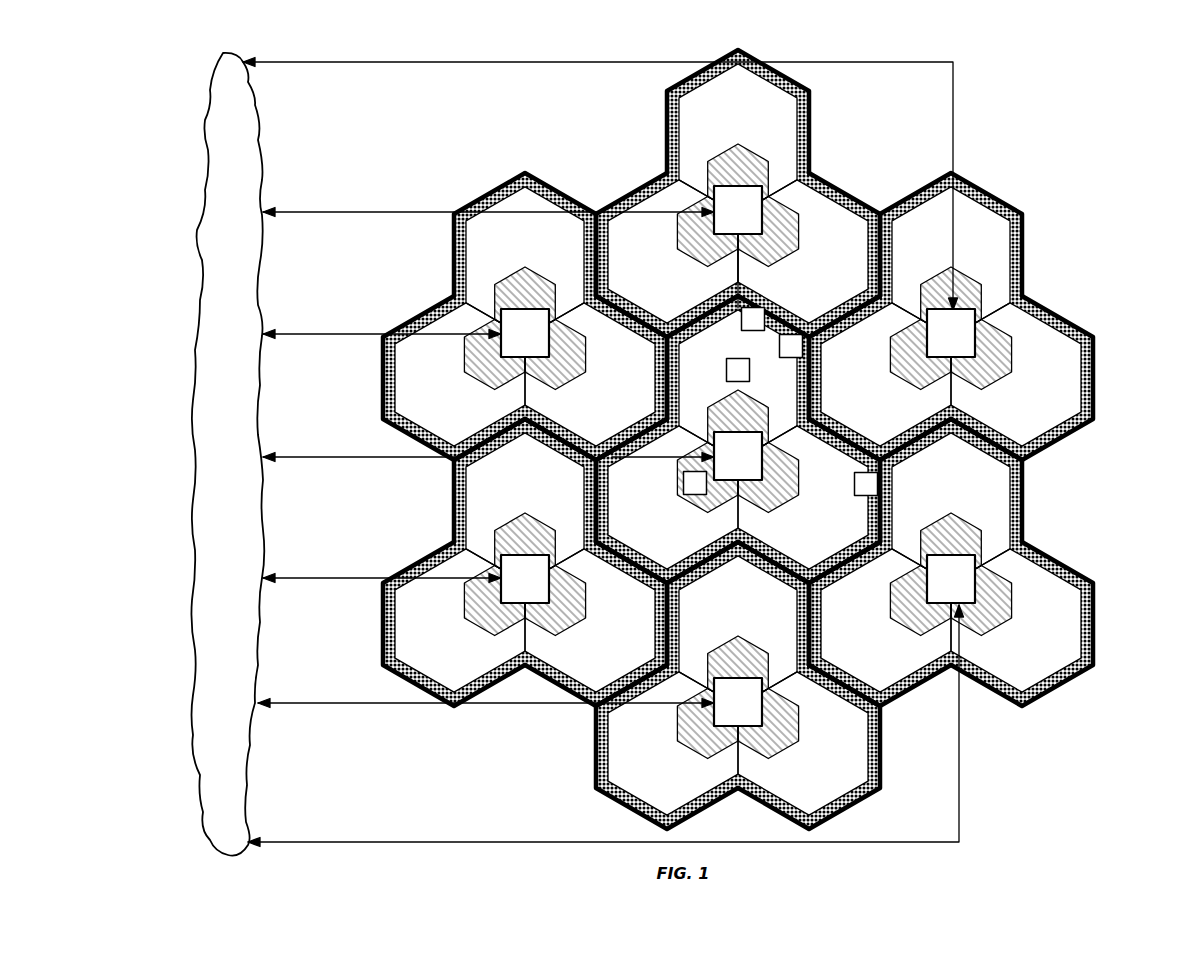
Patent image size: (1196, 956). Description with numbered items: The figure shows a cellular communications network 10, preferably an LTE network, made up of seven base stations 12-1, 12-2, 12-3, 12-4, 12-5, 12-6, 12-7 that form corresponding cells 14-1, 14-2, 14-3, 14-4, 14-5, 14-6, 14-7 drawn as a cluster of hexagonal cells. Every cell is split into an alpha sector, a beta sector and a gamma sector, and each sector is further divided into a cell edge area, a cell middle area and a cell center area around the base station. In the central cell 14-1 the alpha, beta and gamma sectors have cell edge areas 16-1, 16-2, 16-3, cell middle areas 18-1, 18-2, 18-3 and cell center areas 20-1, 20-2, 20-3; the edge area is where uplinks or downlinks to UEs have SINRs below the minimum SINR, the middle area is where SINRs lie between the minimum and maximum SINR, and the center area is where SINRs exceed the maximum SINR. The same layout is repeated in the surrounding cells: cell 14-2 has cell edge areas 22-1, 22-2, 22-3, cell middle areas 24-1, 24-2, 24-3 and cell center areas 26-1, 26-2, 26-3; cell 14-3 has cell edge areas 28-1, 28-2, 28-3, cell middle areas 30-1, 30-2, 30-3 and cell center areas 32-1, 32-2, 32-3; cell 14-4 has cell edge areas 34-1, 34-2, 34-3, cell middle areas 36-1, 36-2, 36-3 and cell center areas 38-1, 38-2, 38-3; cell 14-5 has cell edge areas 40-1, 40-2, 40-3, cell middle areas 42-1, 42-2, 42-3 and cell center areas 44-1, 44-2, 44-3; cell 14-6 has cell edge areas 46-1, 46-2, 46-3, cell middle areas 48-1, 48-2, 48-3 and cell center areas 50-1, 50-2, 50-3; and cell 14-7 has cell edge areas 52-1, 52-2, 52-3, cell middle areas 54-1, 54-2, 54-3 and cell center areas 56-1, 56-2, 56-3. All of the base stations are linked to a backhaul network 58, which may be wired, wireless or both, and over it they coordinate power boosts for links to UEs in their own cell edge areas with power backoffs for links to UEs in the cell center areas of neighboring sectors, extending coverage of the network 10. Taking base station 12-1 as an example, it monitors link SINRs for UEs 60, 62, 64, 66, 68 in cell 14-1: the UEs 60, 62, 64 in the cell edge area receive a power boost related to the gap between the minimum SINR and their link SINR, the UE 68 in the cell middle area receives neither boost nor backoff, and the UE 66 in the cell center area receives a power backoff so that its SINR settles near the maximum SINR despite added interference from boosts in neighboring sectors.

The cellular communications network 10 is at (1085, 115).
The backhaul network 58 is at (207, 110).
The base station 12-1 is at (738, 456).
The base station 12-2 is at (738, 210).
The base station 12-3 is at (951, 333).
The base station 12-4 is at (951, 579).
The base station 12-5 is at (738, 702).
The base station 12-6 is at (525, 579).
The base station 12-7 is at (525, 333).
The cell 14-1 is at (762, 369).
The cell 14-2 is at (734, 193).
The cell 14-3 is at (963, 316).
The cell 14-4 is at (978, 576).
The cell 14-5 is at (756, 688).
The cell 14-6 is at (491, 562).
The cell 14-7 is at (496, 303).
The cell edge area 16-1 is at (738, 357).
The cell edge area 16-2 is at (809, 501).
The cell edge area 16-3 is at (667, 501).
The cell middle area 18-1 is at (738, 385).
The cell middle area 18-2 is at (803, 497).
The cell middle area 18-3 is at (673, 497).
The cell center area 20-1 is at (738, 425).
The cell center area 20-2 is at (707, 481).
The cell center area 20-3 is at (768, 478).
The cell edge area 22-1 is at (705, 111).
The cell edge area 22-2 is at (815, 238).
The cell edge area 22-3 is at (656, 251).
The cell middle area 24-1 is at (738, 139).
The cell middle area 24-2 is at (803, 251).
The cell middle area 24-3 is at (673, 251).
The cell center area 26-1 is at (738, 179).
The cell center area 26-2 is at (707, 232).
The cell center area 26-3 is at (768, 232).
The cell edge area 28-1 is at (967, 234).
The cell edge area 28-2 is at (1034, 375).
The cell edge area 28-3 is at (879, 378).
The cell middle area 30-1 is at (951, 262).
The cell middle area 30-2 is at (1016, 374).
The cell middle area 30-3 is at (886, 374).
The cell center area 32-1 is at (950, 302).
The cell center area 32-2 is at (920, 355).
The cell center area 32-3 is at (981, 355).
The cell edge area 34-1 is at (986, 480).
The cell edge area 34-2 is at (1049, 624).
The cell edge area 34-3 is at (880, 638).
The cell middle area 36-1 is at (951, 508).
The cell middle area 36-2 is at (1016, 620).
The cell middle area 36-3 is at (886, 620).
The cell center area 38-1 is at (951, 548).
The cell center area 38-2 is at (920, 601).
The cell center area 38-3 is at (981, 601).
The cell edge area 40-1 is at (738, 603).
The cell edge area 40-2 is at (834, 747).
The cell edge area 40-3 is at (651, 750).
The cell middle area 42-1 is at (738, 631).
The cell middle area 42-2 is at (803, 743).
The cell middle area 42-3 is at (673, 743).
The cell center area 44-1 is at (738, 671).
The cell center area 44-2 is at (707, 724).
The cell center area 44-3 is at (768, 724).
The cell edge area 46-1 is at (486, 480).
The cell edge area 46-2 is at (587, 624).
The cell edge area 46-3 is at (420, 624).
The cell middle area 48-1 is at (525, 508).
The cell middle area 48-2 is at (590, 620).
The cell middle area 48-3 is at (460, 620).
The cell center area 50-1 is at (525, 548).
The cell center area 50-2 is at (494, 601).
The cell center area 50-3 is at (555, 601).
The cell edge area 52-1 is at (511, 234).
The cell edge area 52-2 is at (596, 378).
The cell edge area 52-3 is at (425, 378).
The cell middle area 54-1 is at (525, 262).
The cell middle area 54-2 is at (590, 374).
The cell middle area 54-3 is at (460, 374).
The cell center area 56-1 is at (525, 302).
The cell center area 56-2 is at (494, 355).
The cell center area 56-3 is at (555, 355).
The UE 60 is at (736, 282).
The UE 62 is at (824, 349).
The UE 64 is at (845, 476).
The UE 66 is at (674, 481).
The UE 68 is at (754, 381).